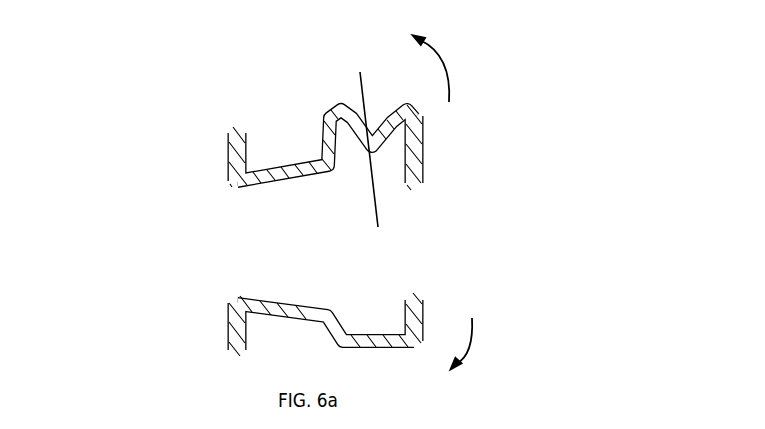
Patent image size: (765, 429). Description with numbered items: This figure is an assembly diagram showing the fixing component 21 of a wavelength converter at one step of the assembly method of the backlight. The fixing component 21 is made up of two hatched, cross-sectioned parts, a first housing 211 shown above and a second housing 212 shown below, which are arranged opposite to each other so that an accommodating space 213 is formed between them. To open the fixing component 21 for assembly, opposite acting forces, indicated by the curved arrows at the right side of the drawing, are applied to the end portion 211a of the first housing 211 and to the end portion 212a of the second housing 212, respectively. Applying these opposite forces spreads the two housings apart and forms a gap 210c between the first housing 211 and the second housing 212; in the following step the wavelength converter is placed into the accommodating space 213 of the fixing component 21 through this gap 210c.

The fixing component 21 is at (157, 95).
The first housing 211 is at (238, 132).
The end portion of the first housing 211a is at (424, 162).
The second housing 212 is at (238, 295).
The end portion of the second housing 212a is at (422, 303).
The accommodating space 213 is at (345, 146).
The gap 210c is at (417, 238).